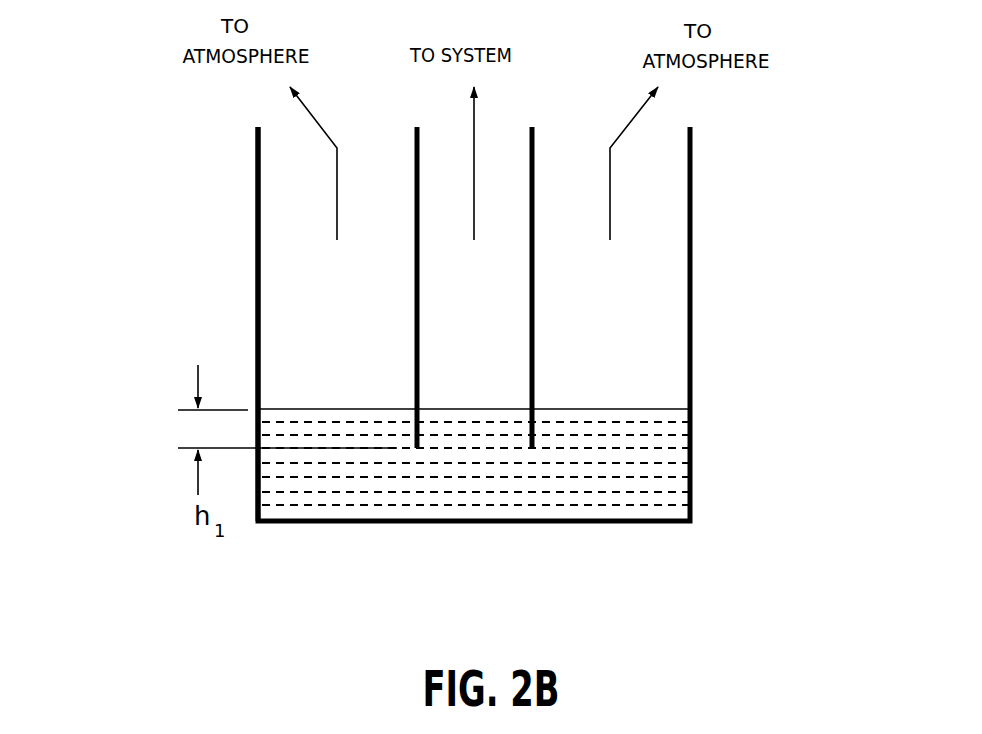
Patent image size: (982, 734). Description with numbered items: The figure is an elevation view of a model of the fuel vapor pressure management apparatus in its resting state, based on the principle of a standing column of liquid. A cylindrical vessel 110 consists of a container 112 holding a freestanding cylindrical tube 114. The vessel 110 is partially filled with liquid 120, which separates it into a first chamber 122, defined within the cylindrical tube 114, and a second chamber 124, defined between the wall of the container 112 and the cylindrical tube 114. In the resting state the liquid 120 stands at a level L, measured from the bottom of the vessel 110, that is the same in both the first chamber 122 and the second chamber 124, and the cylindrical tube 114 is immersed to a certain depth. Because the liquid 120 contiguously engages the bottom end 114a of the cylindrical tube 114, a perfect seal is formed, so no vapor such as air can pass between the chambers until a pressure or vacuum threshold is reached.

The cylindrical vessel 110 is at (482, 526).
The container 112 is at (258, 292).
The cylindrical tube 114 is at (532, 275).
The bottom end 114a is at (417, 449).
The liquid 120 is at (588, 497).
The first chamber 122 is at (489, 367).
The second chamber 124 is at (287, 199).
The level L is at (615, 410).